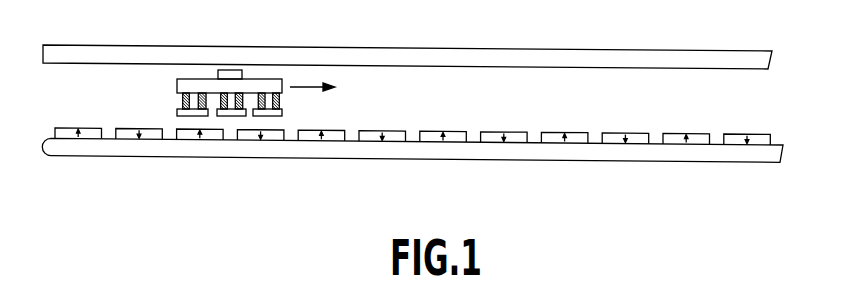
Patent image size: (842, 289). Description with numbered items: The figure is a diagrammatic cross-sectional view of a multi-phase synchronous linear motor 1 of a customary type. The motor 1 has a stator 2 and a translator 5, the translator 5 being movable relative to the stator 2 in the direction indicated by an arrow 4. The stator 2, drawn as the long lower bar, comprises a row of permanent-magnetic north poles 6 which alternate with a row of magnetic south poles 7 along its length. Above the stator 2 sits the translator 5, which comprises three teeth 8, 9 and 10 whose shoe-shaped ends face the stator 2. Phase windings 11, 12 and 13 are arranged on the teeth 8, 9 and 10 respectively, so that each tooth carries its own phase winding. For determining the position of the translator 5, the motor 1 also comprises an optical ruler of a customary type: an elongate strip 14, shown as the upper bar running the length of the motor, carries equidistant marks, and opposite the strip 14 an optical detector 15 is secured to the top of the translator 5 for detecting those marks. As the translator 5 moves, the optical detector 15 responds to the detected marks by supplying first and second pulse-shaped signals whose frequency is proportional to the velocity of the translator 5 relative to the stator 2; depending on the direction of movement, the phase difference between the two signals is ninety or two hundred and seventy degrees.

The multi-phase synchronous linear motor 1 is at (477, 29).
The stator 2 is at (658, 153).
The arrow 4 is at (312, 77).
The translator 5 is at (177, 87).
The permanent-magnetic north poles 6 is at (65, 128).
The magnetic south poles 7 is at (125, 140).
The tooth 8 is at (182, 97).
The tooth 9 is at (212, 97).
The tooth 10 is at (266, 93).
The phase winding 11 is at (181, 100).
The phase winding 12 is at (219, 103).
The phase winding 13 is at (279, 100).
The elongate strip 14 is at (599, 60).
The optical detector 15 is at (235, 70).